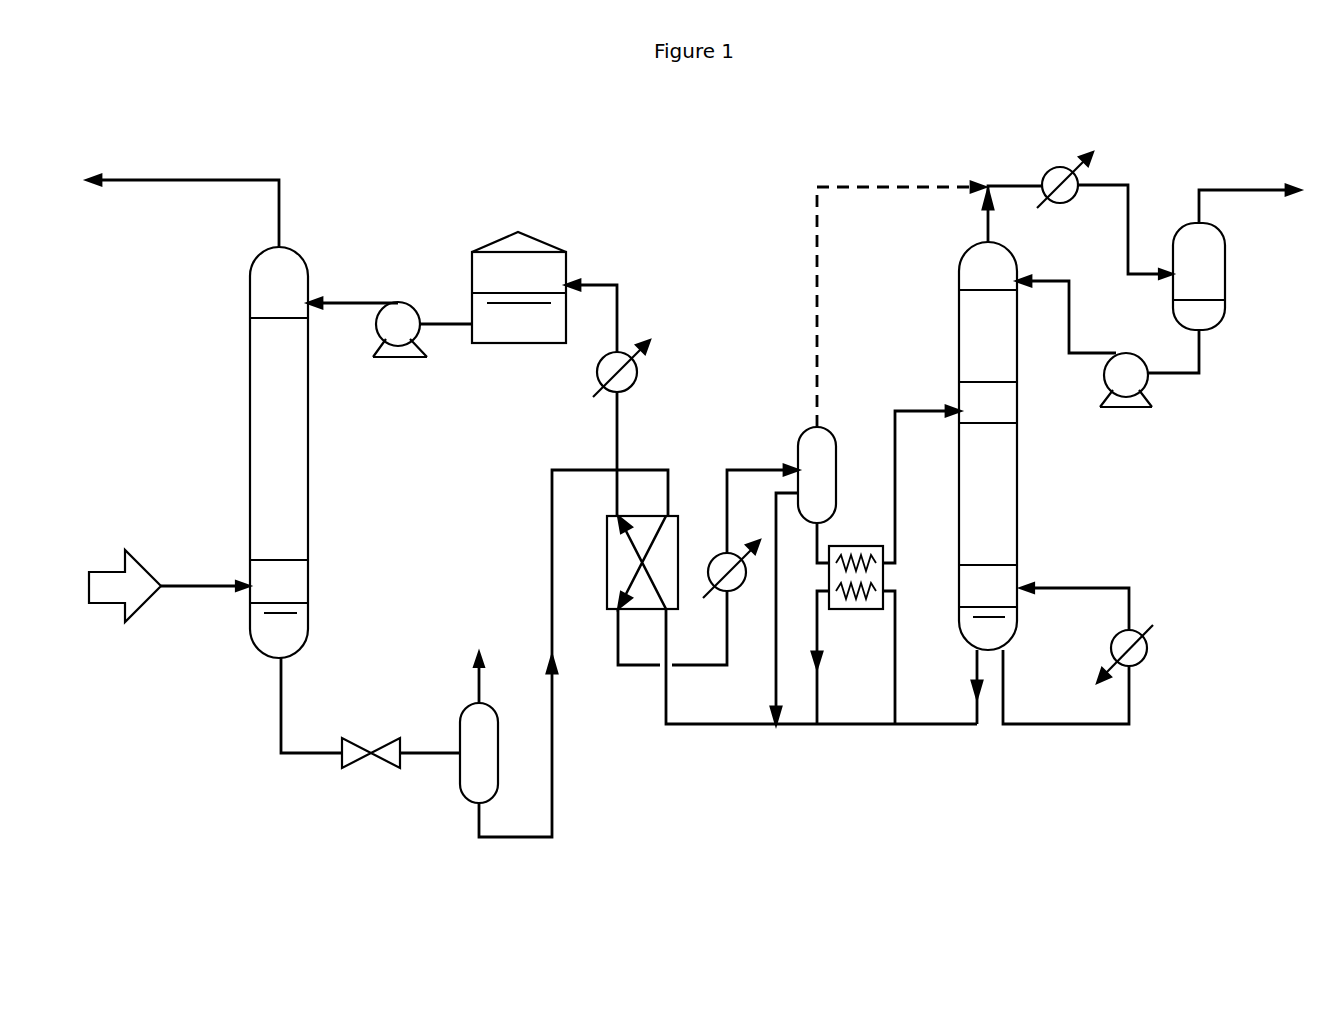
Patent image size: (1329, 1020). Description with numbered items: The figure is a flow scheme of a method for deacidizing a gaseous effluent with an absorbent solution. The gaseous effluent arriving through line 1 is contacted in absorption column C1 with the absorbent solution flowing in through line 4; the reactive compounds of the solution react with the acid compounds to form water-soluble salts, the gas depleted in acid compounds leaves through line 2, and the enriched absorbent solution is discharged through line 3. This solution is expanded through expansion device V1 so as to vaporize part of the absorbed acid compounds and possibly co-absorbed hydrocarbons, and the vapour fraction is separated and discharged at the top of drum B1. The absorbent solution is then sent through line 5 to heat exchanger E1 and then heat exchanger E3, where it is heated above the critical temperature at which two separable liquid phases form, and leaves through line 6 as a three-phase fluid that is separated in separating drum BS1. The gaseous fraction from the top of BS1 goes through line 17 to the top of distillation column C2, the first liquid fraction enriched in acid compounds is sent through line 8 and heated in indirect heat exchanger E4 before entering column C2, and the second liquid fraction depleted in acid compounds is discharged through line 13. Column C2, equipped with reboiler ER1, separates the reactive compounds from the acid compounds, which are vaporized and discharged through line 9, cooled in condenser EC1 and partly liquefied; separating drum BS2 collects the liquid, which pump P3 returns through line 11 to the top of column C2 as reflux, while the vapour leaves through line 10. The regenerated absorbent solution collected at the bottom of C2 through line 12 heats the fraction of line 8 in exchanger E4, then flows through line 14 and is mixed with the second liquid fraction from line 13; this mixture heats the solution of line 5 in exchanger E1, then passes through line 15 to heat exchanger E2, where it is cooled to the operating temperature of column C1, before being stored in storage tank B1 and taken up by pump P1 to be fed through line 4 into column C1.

The line 1 is at (205, 587).
The line 2 is at (187, 178).
The line 3 is at (308, 755).
The line 4 is at (348, 301).
The line 5 is at (553, 775).
The line 6 is at (752, 468).
The line 8 is at (919, 410).
The line 9 is at (985, 220).
The line 10 is at (1230, 188).
The line 11 is at (1069, 318).
The line 12 is at (940, 726).
The line 13 is at (776, 678).
The line 14 is at (817, 703).
The line 15 is at (616, 428).
The line 17 is at (817, 305).
The absorption column C1 is at (308, 457).
The distillation column C2 is at (1017, 472).
The pump P1 is at (422, 347).
The pump P3 is at (1149, 385).
The drum B1 is at (519, 345).
The heat exchanger E1 is at (624, 562).
The heat exchanger E2 is at (633, 368).
The heat exchanger E3 is at (734, 580).
The indirect heat exchanger E4 is at (856, 595).
The separating drum BS1 is at (798, 432).
The separating drum BS2 is at (1226, 285).
The condenser EC1 is at (1065, 169).
The reboiler ER1 is at (1104, 653).
The expansion device V1 is at (371, 769).